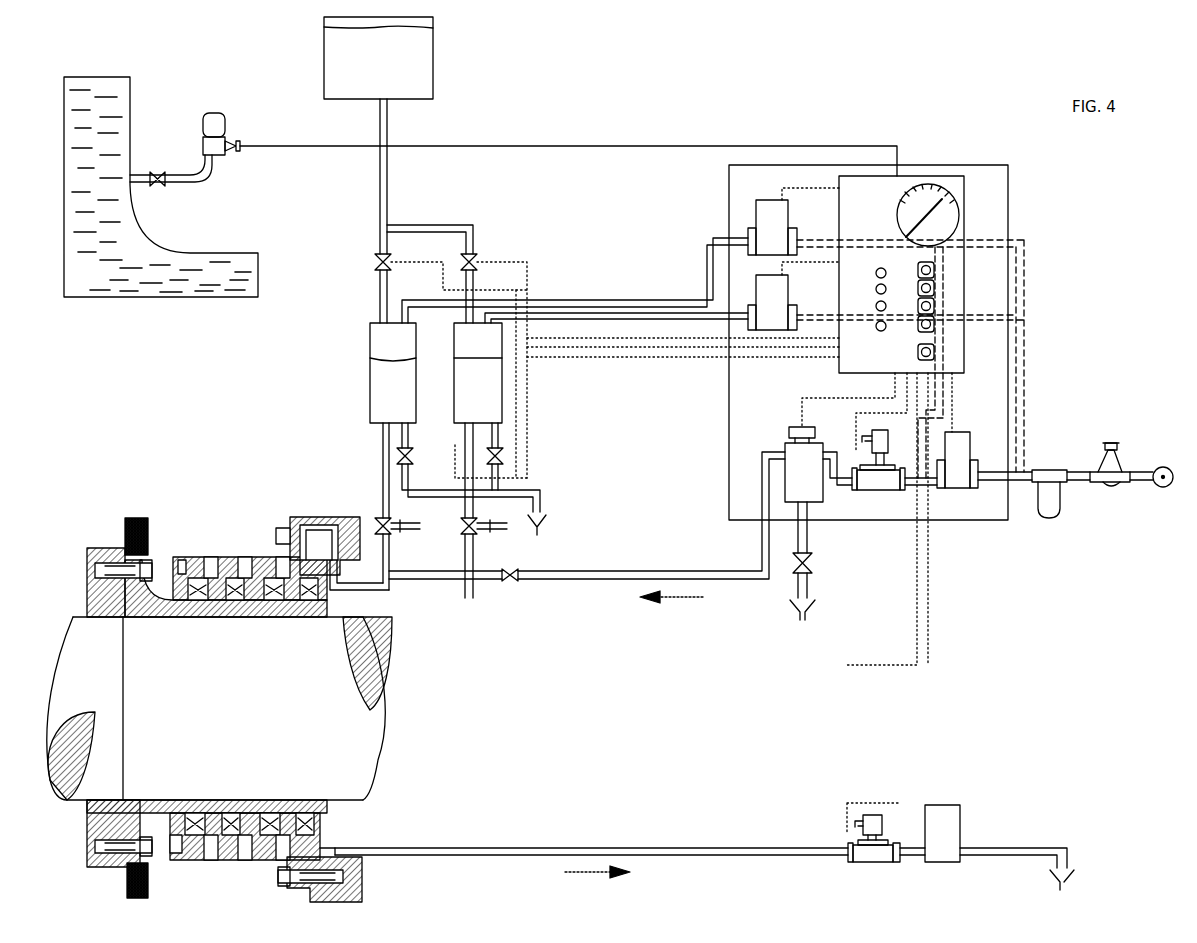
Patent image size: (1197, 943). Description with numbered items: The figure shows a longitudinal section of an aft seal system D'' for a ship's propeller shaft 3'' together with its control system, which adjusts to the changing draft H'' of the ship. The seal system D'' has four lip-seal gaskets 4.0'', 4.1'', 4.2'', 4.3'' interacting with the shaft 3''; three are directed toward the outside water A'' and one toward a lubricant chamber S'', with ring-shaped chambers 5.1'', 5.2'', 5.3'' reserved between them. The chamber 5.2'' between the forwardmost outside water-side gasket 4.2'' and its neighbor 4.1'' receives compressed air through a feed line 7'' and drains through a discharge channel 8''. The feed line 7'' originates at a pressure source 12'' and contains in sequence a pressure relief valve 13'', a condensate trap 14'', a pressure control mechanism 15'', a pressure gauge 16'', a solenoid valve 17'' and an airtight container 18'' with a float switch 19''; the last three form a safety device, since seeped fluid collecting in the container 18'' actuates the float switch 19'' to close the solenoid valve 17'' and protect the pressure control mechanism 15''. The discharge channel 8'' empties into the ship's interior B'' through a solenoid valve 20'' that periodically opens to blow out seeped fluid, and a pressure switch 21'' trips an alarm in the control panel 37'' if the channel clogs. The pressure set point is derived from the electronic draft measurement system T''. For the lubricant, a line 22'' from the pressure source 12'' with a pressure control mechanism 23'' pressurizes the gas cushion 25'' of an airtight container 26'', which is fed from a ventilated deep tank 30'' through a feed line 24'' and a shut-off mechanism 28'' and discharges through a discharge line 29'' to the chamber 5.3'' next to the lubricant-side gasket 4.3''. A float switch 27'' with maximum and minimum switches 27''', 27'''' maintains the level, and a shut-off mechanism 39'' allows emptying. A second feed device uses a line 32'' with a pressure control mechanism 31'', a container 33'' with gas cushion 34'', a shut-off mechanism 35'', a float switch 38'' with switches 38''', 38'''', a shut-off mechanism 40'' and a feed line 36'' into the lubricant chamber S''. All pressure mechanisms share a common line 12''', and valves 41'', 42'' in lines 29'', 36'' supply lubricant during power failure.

The current draft H'' is at (161, 165).
The outside water A'' is at (81, 418).
The electronic draft measurement system T'' is at (513, 140).
The ventilated deep tank 30'' is at (358, 58).
The feed line 24'' is at (362, 211).
The shut-off mechanism 28'' is at (431, 272).
The shut-off mechanism 35'' is at (458, 351).
The gas cushion 34'' is at (490, 293).
The gas cushion 25'' is at (372, 371).
The float switch 27'' is at (337, 355).
The container 26'' is at (351, 379).
The float switch 27''' is at (425, 345).
The float switch 27'''' is at (432, 395).
The container 33'' is at (509, 373).
The float switch 38'' is at (482, 378).
The float switch 38''' is at (537, 367).
The float switch 38'''' is at (535, 425).
The line 22'' is at (575, 280).
The line 32'' is at (616, 325).
The control panel 37'' is at (876, 391).
The pressure gauge 16'' is at (928, 190).
The pressure control mechanism 23'' is at (772, 227).
The pressure control mechanism 31'' is at (772, 302).
The airtight container 18'' is at (782, 522).
The float switch 19'' is at (791, 415).
The feed line 7'' is at (587, 527).
The solenoid valve 17'' is at (880, 484).
The pressure control mechanism 15'' is at (984, 488).
The condensate trap 14'' is at (1061, 513).
The common line 12''' is at (1073, 449).
The pressure relief valve 13'' is at (1121, 452).
The pressure source 12'' is at (1170, 458).
The discharge line 29'' is at (359, 506).
The 2/3-way valve 41'' is at (410, 538).
The shut-off mechanism 39'' is at (471, 479).
The shut-off mechanism 40'' is at (510, 456).
The feed line 36'' is at (495, 510).
The 2/3-way valve 42'' is at (491, 538).
The lubricant chamber S'' is at (447, 590).
The seal system D'' is at (224, 675).
The ring-shaped chamber 5.1'' is at (209, 544).
The ring-shaped chamber 5.2'' is at (246, 545).
The ring-shaped chamber 5.3'' is at (271, 556).
The gasket 4.0'' is at (191, 629).
The gasket 4.1'' is at (228, 630).
The gasket 4.2'' is at (266, 628).
The gasket 4.3'' is at (309, 630).
The propeller shaft 3'' is at (229, 708).
The discharge channel 8'' is at (704, 869).
The interior of the ship B'' is at (1064, 905).
The solenoid valve 20'' is at (859, 849).
The pressure switch 21'' is at (955, 849).